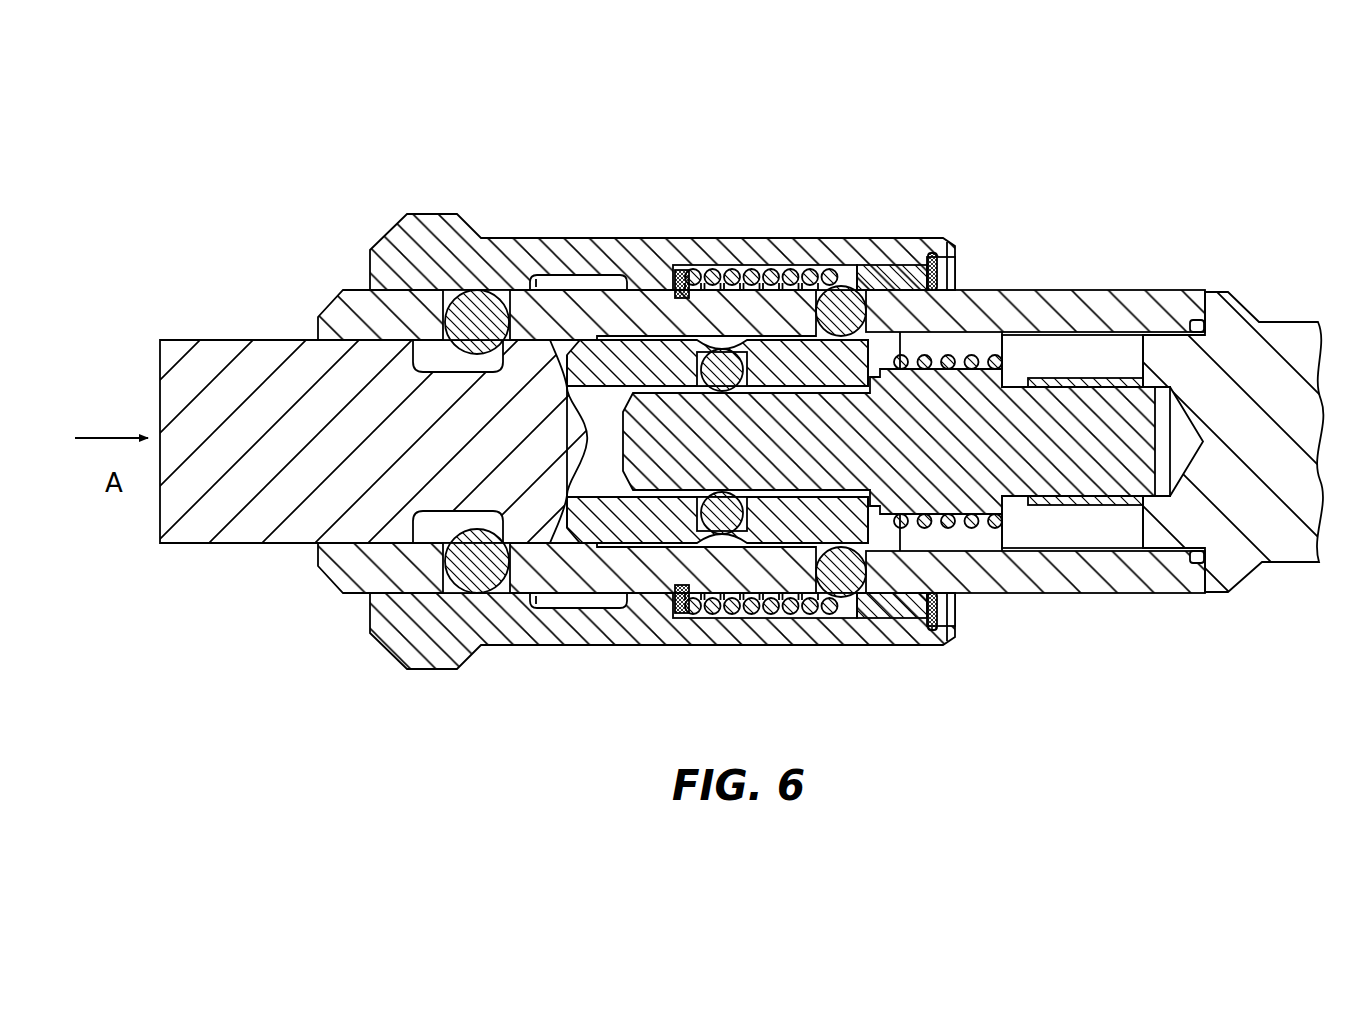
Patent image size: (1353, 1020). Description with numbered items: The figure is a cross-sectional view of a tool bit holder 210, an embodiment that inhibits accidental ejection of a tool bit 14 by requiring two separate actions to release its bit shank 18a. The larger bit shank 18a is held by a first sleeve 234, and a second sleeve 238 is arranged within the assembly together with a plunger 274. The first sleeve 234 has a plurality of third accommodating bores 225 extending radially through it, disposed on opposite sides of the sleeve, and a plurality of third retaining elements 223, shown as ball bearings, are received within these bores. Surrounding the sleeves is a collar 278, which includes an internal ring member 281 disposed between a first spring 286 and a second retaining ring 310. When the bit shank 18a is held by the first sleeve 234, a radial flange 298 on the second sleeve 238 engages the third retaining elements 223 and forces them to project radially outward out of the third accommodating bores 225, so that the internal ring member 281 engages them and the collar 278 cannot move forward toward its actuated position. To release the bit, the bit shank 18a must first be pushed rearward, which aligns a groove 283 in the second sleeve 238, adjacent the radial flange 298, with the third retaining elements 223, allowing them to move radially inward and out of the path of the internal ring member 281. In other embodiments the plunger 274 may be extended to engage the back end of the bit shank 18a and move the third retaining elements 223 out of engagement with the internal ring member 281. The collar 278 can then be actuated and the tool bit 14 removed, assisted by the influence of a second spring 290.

The tool bit 14 is at (205, 336).
The bit shank 18a is at (220, 547).
The tool bit holder 210 is at (1032, 134).
The third retaining elements 223 is at (843, 302).
The third accommodating bores 225 is at (866, 348).
The first sleeve 234 is at (340, 595).
The second sleeve 238 is at (653, 352).
The plunger 274 is at (1010, 487).
The collar 278 is at (510, 238).
The internal ring member 281 is at (907, 612).
The groove 283 is at (822, 348).
The first spring 286 is at (748, 272).
The second spring 290 is at (974, 353).
The radial flange 298 is at (880, 335).
The second retaining ring 310 is at (939, 262).